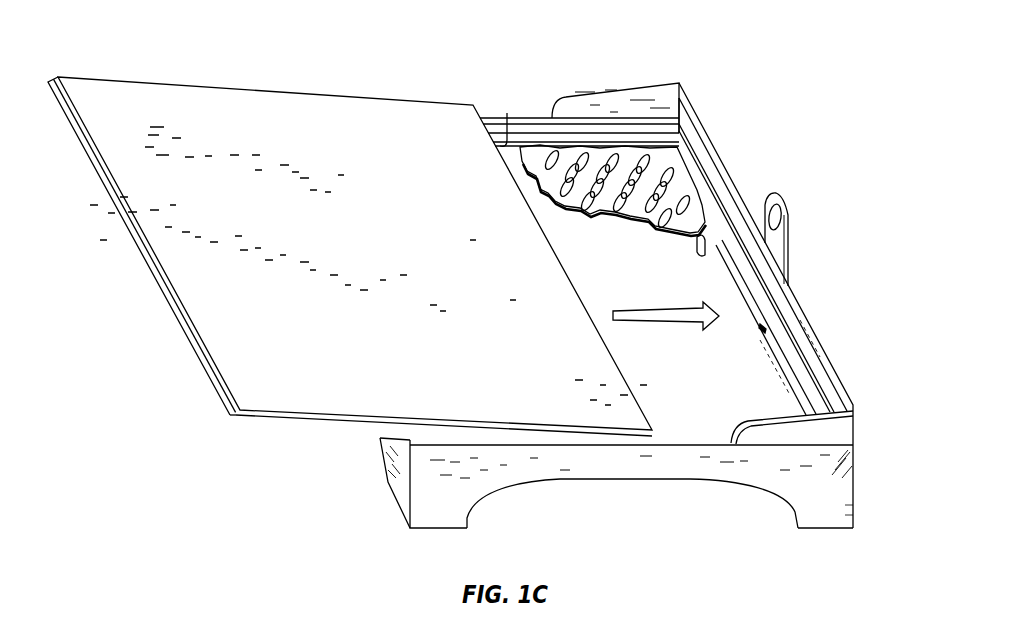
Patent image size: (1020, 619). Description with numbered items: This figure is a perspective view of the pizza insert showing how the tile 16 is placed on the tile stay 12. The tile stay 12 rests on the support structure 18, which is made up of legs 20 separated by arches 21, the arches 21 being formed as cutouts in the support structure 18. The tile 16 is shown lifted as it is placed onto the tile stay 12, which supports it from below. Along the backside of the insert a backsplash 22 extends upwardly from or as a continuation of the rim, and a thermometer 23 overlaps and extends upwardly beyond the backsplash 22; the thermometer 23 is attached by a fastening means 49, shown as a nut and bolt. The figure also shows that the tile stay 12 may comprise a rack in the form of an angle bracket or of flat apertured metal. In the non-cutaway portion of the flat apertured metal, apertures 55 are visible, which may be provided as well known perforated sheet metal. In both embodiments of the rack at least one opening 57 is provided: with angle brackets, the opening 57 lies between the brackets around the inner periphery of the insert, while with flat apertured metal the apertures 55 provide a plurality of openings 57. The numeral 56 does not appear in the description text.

The tile stay 12 is at (500, 142).
The tile 16 is at (293, 108).
The support structure 18 is at (848, 478).
The legs 20 is at (848, 520).
The arches 21 is at (755, 320).
The backsplash 22 is at (802, 342).
The thermometer 23 is at (785, 217).
The fastening means 49 is at (767, 333).
The apertures 55 is at (582, 153).
The guide 56 is at (680, 130).
The opening 57 is at (617, 143).